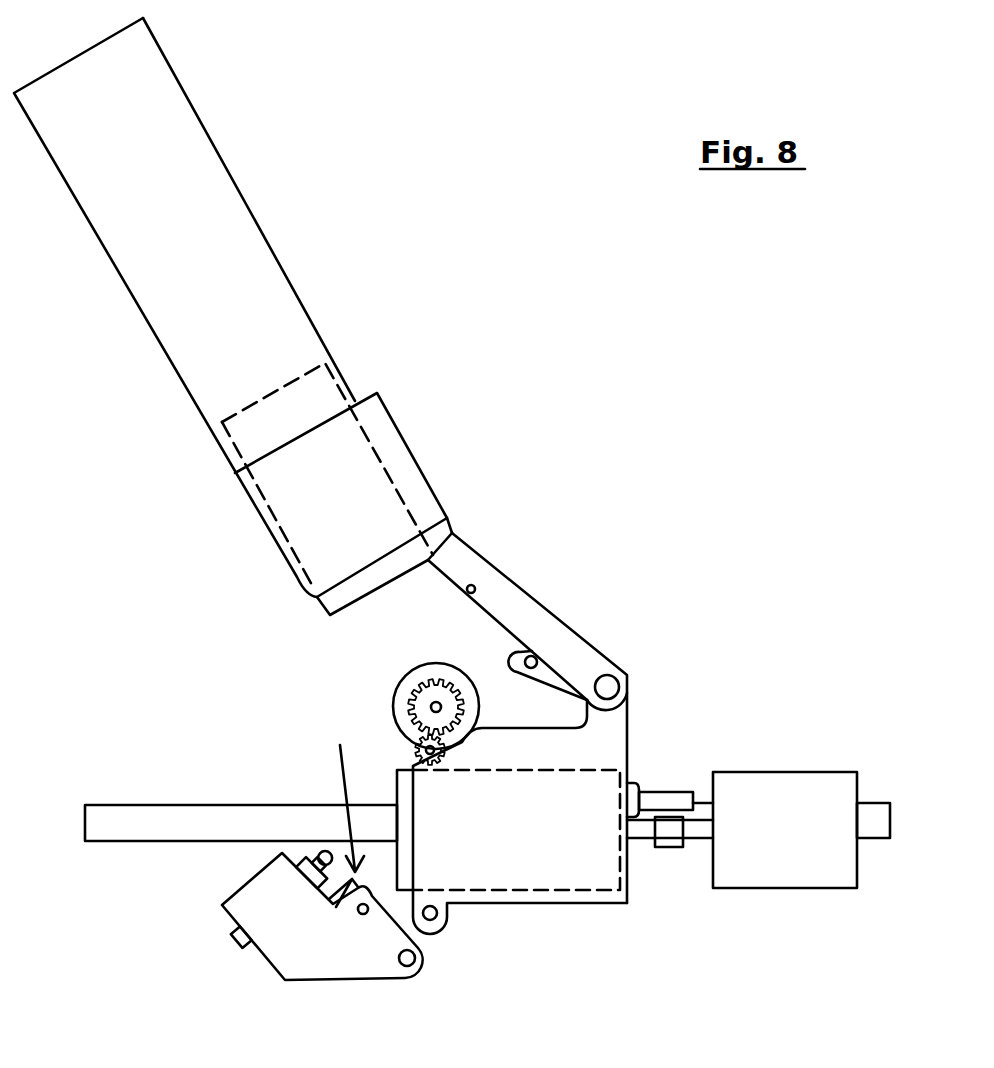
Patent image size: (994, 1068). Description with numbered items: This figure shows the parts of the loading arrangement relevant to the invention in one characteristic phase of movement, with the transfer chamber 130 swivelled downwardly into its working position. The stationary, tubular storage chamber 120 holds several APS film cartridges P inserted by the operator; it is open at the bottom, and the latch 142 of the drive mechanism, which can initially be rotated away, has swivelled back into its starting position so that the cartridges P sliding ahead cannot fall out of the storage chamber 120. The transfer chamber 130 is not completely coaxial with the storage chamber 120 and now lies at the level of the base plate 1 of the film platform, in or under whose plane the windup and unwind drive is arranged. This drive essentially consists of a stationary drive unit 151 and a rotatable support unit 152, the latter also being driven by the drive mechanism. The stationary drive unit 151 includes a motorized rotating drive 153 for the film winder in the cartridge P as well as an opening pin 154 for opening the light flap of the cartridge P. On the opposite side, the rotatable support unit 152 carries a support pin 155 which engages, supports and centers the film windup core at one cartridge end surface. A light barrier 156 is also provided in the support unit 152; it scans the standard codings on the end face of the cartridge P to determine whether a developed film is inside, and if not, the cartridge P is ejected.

The base plate 1 is at (122, 817).
The storage chamber 120 is at (248, 250).
The transfer chamber 130 is at (513, 890).
The latch 142 is at (533, 615).
The stationary drive unit 151 is at (748, 832).
The rotatable support unit 152 is at (325, 960).
The motorized rotating drive 153 is at (663, 832).
The opening pin 154 is at (632, 785).
The support pin 155 is at (326, 852).
The light barrier 156 is at (327, 786).
The APS film cartridge P is at (260, 442).